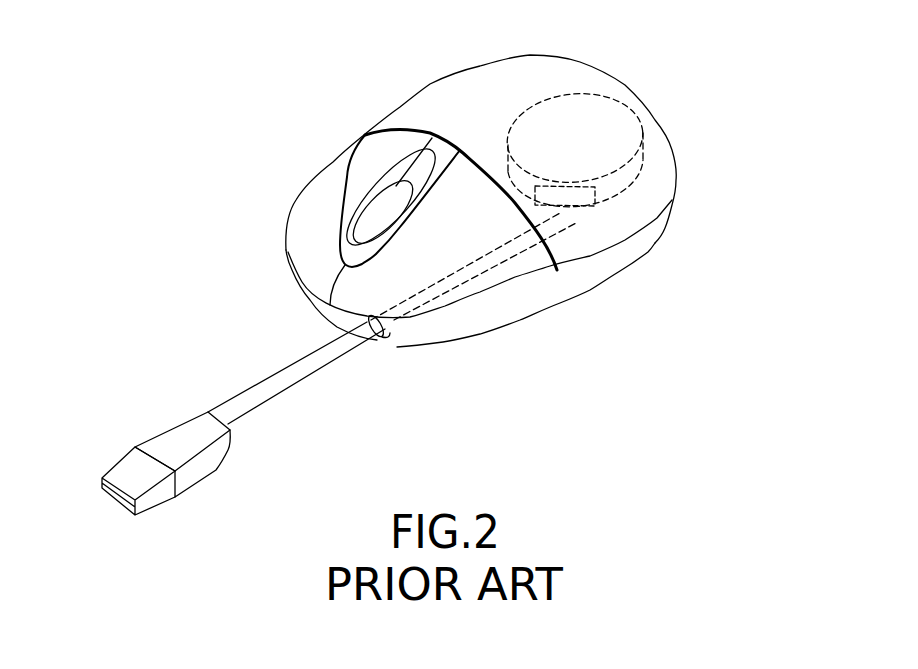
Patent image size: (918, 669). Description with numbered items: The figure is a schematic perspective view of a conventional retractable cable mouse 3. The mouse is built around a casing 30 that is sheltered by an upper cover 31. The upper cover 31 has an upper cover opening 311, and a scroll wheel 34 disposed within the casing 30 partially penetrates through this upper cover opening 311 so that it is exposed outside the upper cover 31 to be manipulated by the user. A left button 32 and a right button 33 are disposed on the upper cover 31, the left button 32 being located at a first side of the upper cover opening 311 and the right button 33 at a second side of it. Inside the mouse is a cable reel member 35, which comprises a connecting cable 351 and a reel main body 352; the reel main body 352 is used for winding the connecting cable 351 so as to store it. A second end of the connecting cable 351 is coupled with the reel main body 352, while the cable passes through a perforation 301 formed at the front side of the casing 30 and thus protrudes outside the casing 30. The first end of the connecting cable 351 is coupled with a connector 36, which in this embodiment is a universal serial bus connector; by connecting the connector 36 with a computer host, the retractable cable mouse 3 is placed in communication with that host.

The retractable cable mouse 3 is at (347, 55).
The casing 30 is at (563, 280).
The perforation 301 is at (384, 334).
The upper cover 31 is at (545, 80).
The upper cover opening 311 is at (397, 177).
The left button 32 is at (427, 253).
The right button 33 is at (310, 227).
The scroll wheel 34 is at (367, 222).
The cable reel member 35 is at (643, 147).
The connecting cable 351 is at (540, 258).
The reel main body 352 is at (580, 140).
The connector 36 is at (170, 443).